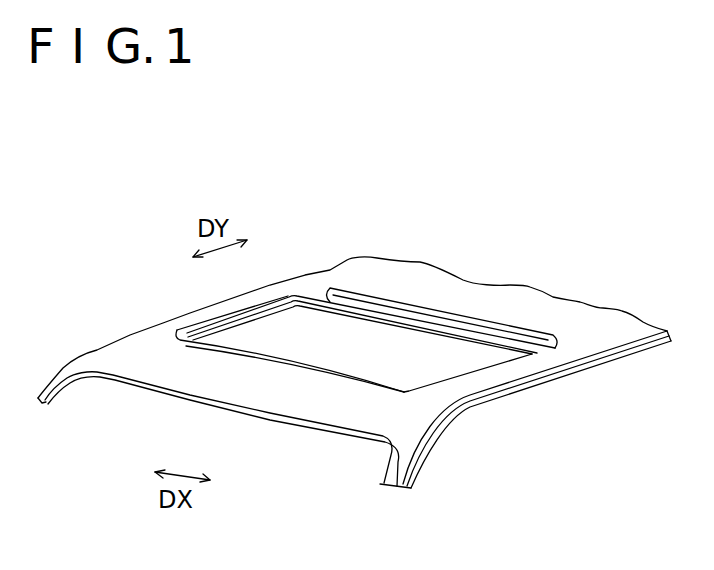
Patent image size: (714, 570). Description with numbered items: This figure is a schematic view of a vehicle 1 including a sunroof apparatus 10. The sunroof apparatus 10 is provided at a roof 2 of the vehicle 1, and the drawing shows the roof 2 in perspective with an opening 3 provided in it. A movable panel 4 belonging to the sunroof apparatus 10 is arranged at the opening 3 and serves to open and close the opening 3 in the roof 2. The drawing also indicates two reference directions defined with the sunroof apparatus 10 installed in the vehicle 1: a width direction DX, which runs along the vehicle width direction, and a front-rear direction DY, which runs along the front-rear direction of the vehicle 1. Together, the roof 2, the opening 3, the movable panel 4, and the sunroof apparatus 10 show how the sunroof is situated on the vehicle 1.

The vehicle 1 is at (403, 210).
The roof 2 is at (612, 320).
The opening 3 is at (475, 372).
The movable panel 4 is at (467, 323).
The sunroof apparatus 10 is at (358, 280).